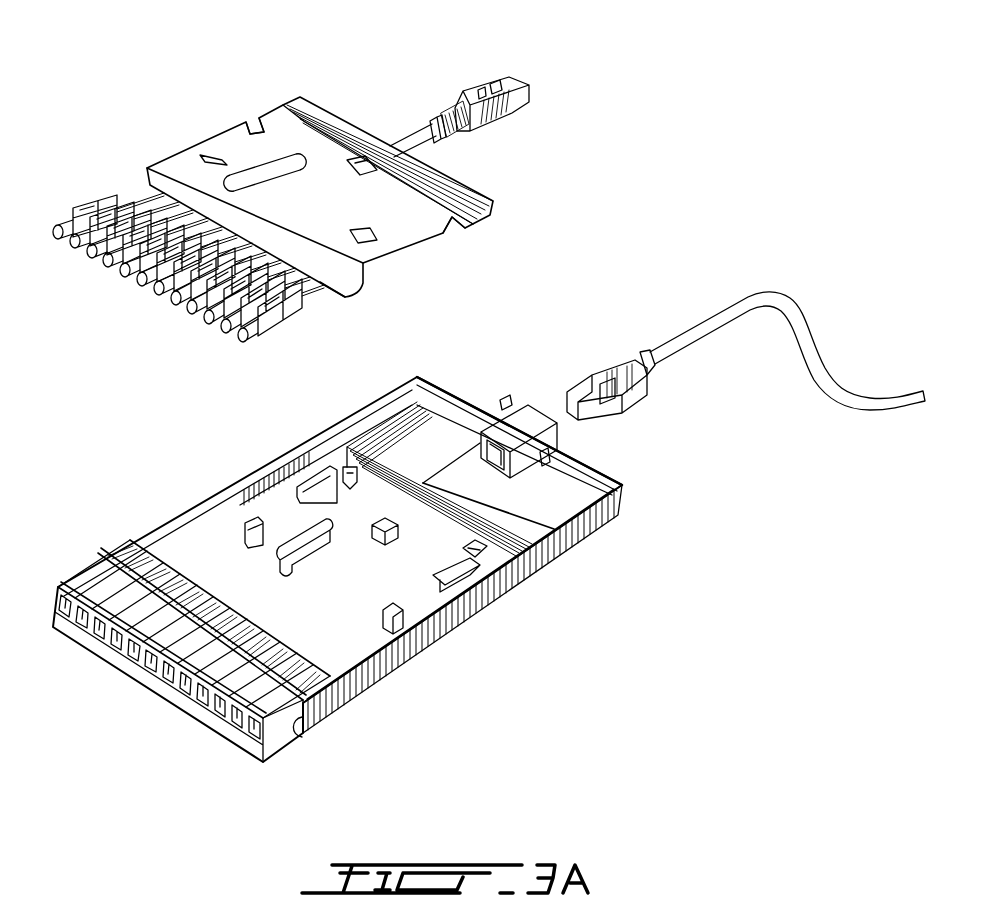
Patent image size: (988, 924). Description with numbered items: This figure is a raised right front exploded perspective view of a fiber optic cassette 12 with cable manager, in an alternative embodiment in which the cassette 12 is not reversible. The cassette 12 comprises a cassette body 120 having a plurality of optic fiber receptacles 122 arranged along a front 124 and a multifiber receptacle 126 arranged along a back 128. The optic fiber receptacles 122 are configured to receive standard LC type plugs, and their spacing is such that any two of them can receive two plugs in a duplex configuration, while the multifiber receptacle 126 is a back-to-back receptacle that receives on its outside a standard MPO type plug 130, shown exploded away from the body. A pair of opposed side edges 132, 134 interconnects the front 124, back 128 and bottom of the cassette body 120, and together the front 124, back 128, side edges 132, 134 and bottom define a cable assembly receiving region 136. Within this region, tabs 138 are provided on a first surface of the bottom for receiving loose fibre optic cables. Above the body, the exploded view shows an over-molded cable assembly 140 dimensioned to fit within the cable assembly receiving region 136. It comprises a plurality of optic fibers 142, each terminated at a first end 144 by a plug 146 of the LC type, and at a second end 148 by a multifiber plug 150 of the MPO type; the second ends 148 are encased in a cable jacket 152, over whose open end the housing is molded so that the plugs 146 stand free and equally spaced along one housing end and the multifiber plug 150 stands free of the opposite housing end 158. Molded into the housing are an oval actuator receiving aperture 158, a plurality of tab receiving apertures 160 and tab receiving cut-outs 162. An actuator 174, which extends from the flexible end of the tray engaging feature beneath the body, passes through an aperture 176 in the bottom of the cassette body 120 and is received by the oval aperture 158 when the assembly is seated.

The cassette 12 is at (668, 207).
The cassette body 120 is at (163, 523).
The optic fiber receptacles 122 is at (133, 663).
The front 124 is at (297, 738).
The multifiber receptacle 126 is at (527, 423).
The back 128 is at (463, 420).
The MPO type plug 130 is at (627, 358).
The side edge 132 is at (417, 640).
The side edge 134 is at (228, 503).
The cable assembly receiving region 136 is at (483, 510).
The tabs 138 is at (350, 480).
The over-molded cable assembly 140 is at (167, 148).
The optic fibers 142 is at (122, 222).
The first end 144 is at (327, 287).
The plug 146 is at (95, 207).
The second end 148 is at (437, 123).
The multifiber plug 150 is at (470, 90).
The cable jacket 152 is at (410, 143).
The oval actuator receiving aperture 158 is at (290, 165).
The tab receiving apertures 160 is at (353, 240).
The tab receiving cut-outs 162 is at (245, 130).
The actuator 174 is at (317, 533).
The aperture 176 is at (297, 553).